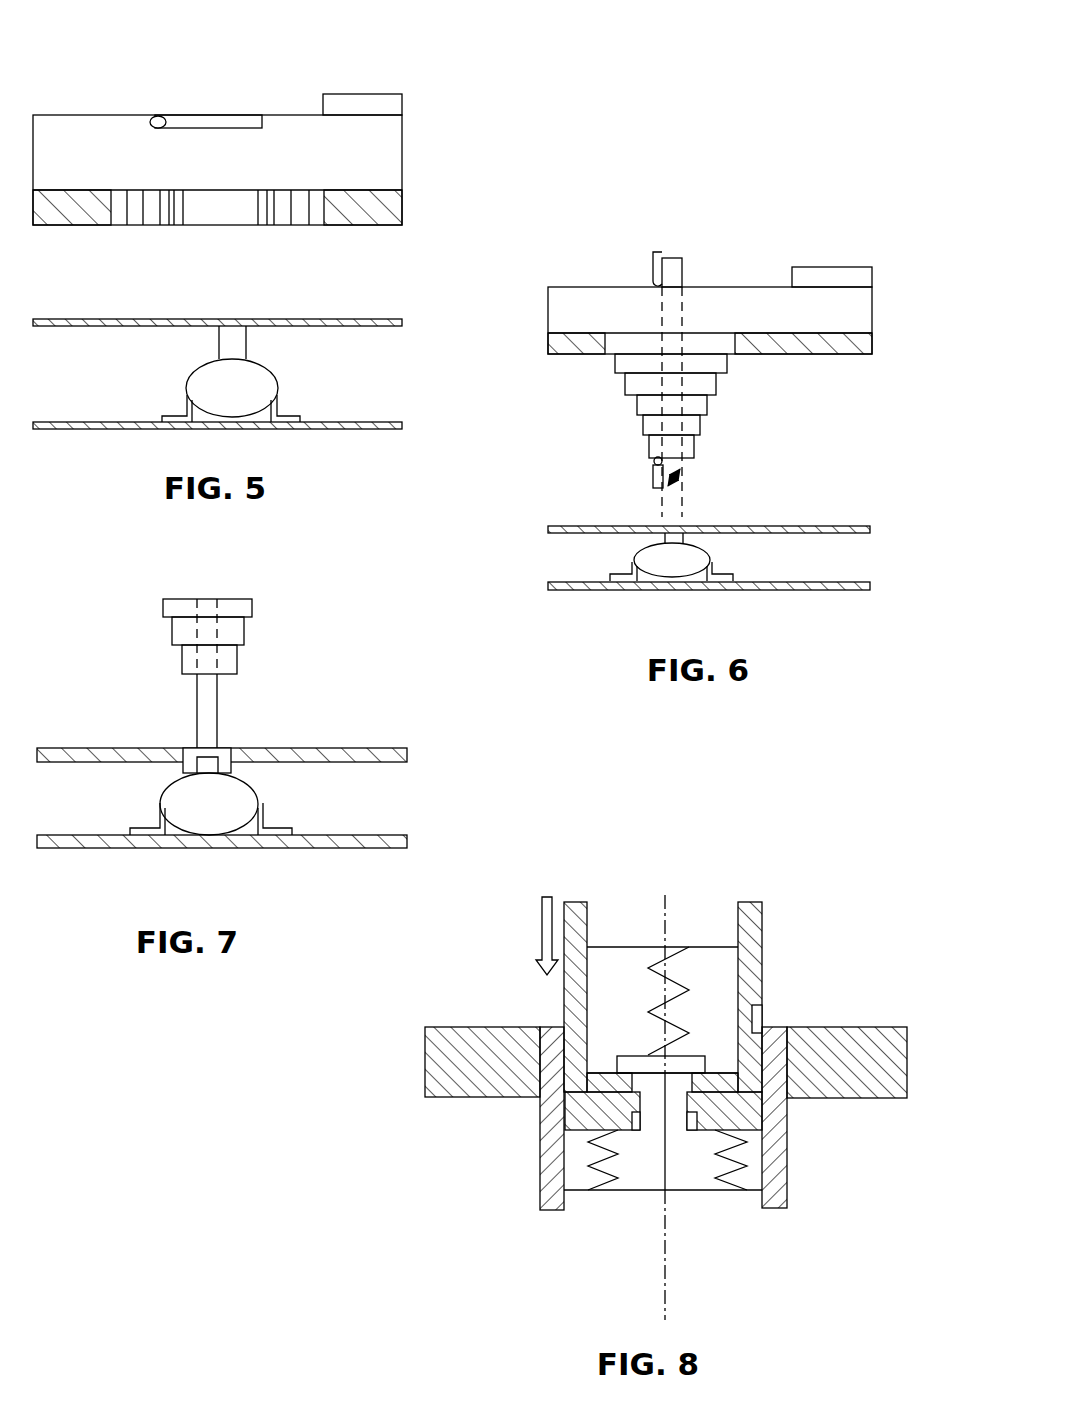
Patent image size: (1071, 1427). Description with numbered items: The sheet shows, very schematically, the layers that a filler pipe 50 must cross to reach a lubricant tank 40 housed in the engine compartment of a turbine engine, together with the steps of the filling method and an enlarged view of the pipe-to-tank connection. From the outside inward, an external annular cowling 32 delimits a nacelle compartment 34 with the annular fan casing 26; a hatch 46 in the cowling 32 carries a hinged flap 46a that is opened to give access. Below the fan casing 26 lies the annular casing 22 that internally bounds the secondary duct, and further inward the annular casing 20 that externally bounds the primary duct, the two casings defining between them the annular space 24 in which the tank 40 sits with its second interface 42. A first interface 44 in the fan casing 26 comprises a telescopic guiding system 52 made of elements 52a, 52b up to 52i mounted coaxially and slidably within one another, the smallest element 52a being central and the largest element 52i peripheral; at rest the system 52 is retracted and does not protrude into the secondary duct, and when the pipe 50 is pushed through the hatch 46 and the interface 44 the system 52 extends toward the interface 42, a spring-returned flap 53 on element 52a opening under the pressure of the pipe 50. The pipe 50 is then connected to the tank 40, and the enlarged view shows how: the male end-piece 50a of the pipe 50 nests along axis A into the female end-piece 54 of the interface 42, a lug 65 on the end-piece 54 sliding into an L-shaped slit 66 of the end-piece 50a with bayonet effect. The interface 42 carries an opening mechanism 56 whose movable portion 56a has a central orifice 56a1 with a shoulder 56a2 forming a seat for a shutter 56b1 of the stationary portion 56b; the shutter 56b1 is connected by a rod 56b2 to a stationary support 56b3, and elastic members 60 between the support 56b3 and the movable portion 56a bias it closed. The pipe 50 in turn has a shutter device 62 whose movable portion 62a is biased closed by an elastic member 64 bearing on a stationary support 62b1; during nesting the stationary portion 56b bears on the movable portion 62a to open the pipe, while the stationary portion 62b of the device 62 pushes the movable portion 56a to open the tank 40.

In FIG. 5, the annular casing 20 is at (397, 420).
In FIG. 6, the annular casing 20 is at (873, 587).
In FIG. 5, the annular casing 22 is at (397, 318).
In FIG. 6, the annular casing 22 is at (873, 530).
In FIG. 8, the annular casing 22 is at (883, 1048).
In FIG. 5, the annular space 24 is at (92, 382).
In FIG. 5, the annular fan casing 26 is at (403, 208).
In FIG. 6, the annular fan casing 26 is at (862, 345).
In FIG. 5, the external annular cowling 32 is at (403, 98).
In FIG. 6, the external annular cowling 32 is at (873, 275).
In FIG. 5, the nacelle compartment 34 is at (373, 170).
In FIG. 5, the lubricant tank 40 is at (263, 378).
In FIG. 6, the lubricant tank 40 is at (677, 572).
In FIG. 7, the lubricant tank 40 is at (200, 827).
In FIG. 5, the second interface 42 is at (247, 330).
In FIG. 6, the second interface 42 is at (683, 540).
In FIG. 7, the second interface 42 is at (180, 770).
In FIG. 8, the second interface 42 is at (801, 1203).
In FIG. 5, the first interface 44 is at (240, 226).
In FIG. 5, the hatch 46 is at (237, 113).
In FIG. 5, the flap 46a is at (192, 121).
In FIG. 6, the flap 46a is at (660, 285).
In FIG. 6, the removable tubular pipe 50 is at (675, 425).
In FIG. 7, the removable tubular pipe 50 is at (205, 707).
In FIG. 8, the removable tubular pipe 50 is at (765, 901).
In FIG. 8, the male end-piece 50a is at (570, 1012).
In FIG. 5, the telescopic guiding system 52 is at (131, 188).
In FIG. 6, the telescopic guiding system 52 is at (719, 314).
In FIG. 7, the telescopic guiding system 52 is at (165, 638).
In FIG. 5, the smallest element 52a is at (242, 202).
In FIG. 6, the smallest element 52a is at (652, 450).
In FIG. 5, the element of the telescopic guiding system 52b is at (262, 198).
In FIG. 6, the element of the telescopic guiding system 52b is at (640, 425).
In FIG. 5, the largest element 52i is at (323, 198).
In FIG. 6, the largest element 52i is at (607, 342).
In FIG. 6, the flap 53 is at (653, 483).
In FIG. 8, the female end-piece 54 is at (552, 1198).
In FIG. 8, the opening mechanism 56 is at (628, 1204).
In FIG. 8, the movable portion 56a is at (702, 1122).
In FIG. 8, the central orifice 56a1 is at (648, 1107).
In FIG. 8, the shoulder 56a2 is at (600, 1155).
In FIG. 8, the stationary portion 56b is at (788, 1150).
In FIG. 8, the shutter 56b1 is at (700, 1118).
In FIG. 8, the rod 56b2 is at (663, 1163).
In FIG. 8, the stationary support 56b3 is at (750, 1190).
In FIG. 8, the elastic member 60 is at (600, 1183).
In FIG. 8, the shutter device 62 is at (692, 887).
In FIG. 8, the movable portion 62a is at (627, 1056).
In FIG. 8, the stationary portion 62b is at (600, 1073).
In FIG. 8, the stationary support 62b1 is at (748, 915).
In FIG. 8, the elastic member 64 is at (677, 980).
In FIG. 8, the lug 65 is at (762, 1030).
In FIG. 8, the L-shaped slit 66 is at (758, 1055).
In FIG. 8, the axis A is at (668, 1272).